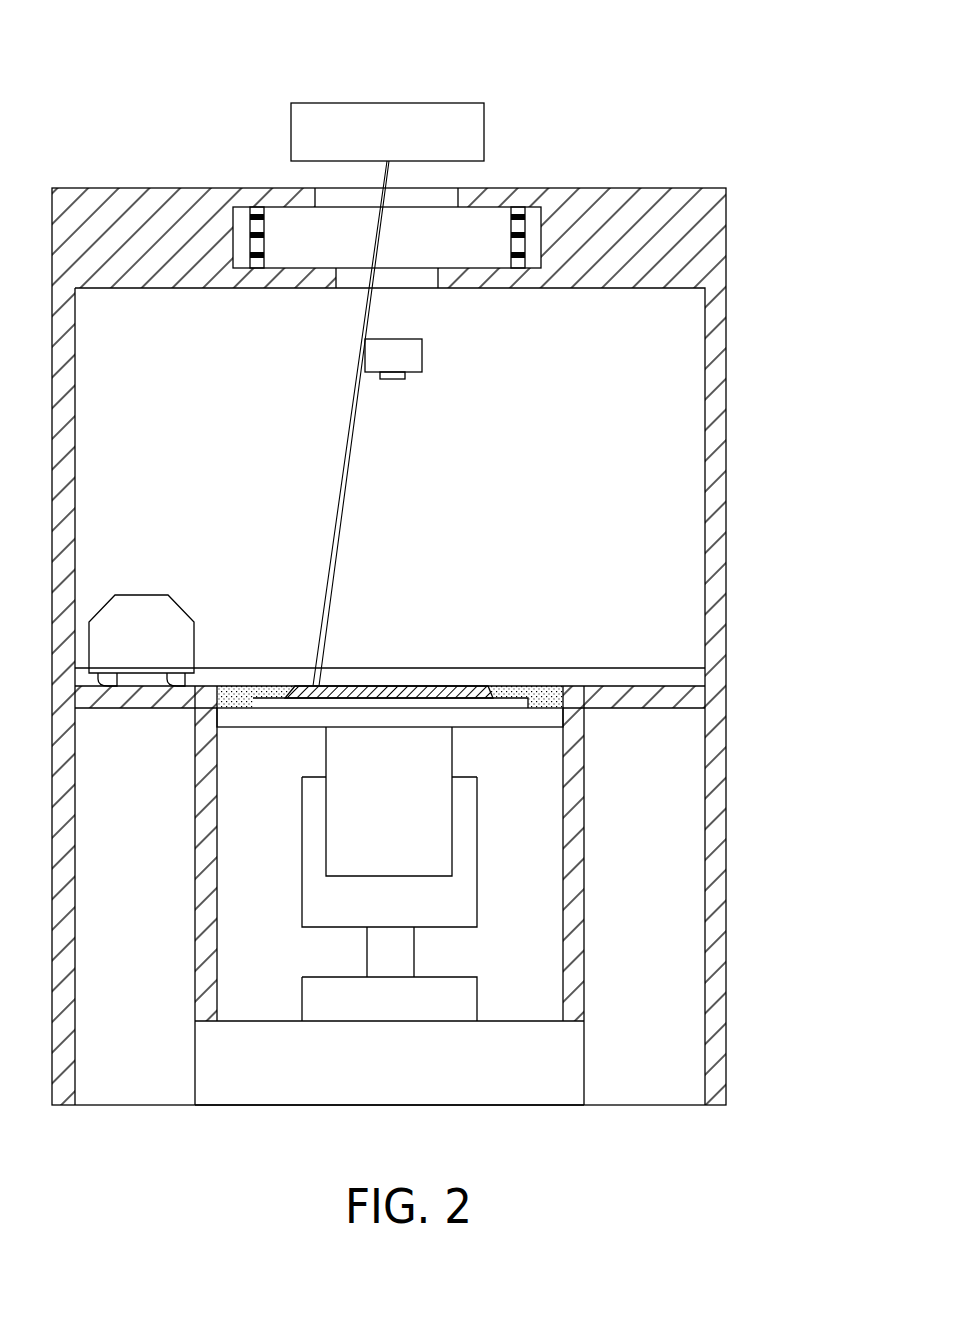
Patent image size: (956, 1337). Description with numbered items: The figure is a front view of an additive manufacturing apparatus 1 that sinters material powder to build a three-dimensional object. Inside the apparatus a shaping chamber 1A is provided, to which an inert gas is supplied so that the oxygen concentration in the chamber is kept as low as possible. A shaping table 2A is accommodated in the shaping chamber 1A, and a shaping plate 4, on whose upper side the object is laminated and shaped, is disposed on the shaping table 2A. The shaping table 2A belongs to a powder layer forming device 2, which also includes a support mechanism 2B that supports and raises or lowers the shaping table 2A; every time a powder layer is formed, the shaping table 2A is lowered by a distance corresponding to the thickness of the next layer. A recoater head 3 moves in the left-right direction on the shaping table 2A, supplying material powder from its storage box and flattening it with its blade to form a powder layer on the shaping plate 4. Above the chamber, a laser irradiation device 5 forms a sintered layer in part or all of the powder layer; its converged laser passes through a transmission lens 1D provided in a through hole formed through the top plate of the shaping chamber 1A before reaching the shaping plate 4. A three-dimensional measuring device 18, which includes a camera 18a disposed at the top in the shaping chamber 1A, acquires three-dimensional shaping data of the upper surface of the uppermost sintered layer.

The additive manufacturing apparatus 1 is at (768, 190).
The shaping chamber 1A is at (122, 327).
The transmission lens 1D is at (448, 197).
The powder layer forming device 2 is at (431, 876).
The shaping table 2A is at (497, 719).
The support mechanism 2B is at (343, 850).
The recoater head 3 is at (198, 556).
The shaping plate 4 is at (397, 703).
The laser irradiation device 5 is at (399, 122).
The three-dimensional measuring device 18 is at (446, 352).
The camera 18a is at (410, 357).